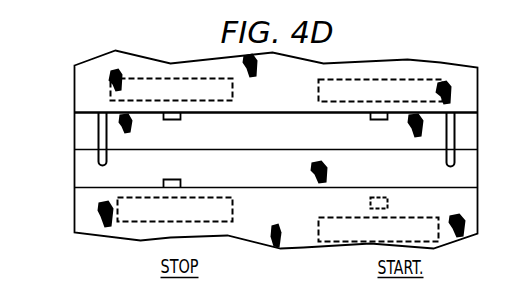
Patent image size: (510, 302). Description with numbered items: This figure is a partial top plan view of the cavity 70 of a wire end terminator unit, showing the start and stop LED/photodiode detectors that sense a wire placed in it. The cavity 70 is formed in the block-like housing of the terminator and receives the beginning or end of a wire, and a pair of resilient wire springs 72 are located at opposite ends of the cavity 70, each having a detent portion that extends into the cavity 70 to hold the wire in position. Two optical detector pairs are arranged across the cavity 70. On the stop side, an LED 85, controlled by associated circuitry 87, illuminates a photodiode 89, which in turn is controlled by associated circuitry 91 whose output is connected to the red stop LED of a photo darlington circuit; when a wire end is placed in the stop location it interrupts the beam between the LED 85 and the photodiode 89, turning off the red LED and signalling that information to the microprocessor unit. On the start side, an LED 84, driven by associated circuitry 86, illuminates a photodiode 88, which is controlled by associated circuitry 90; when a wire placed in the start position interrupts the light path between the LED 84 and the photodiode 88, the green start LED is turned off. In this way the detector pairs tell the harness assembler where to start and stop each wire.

The cavity 70 is at (297, 173).
The resilient wire spring 72 is at (98, 139).
The LED 84 is at (377, 119).
The LED 85 is at (174, 119).
The associated circuitry 86 is at (360, 85).
The associated circuitry 87 is at (150, 83).
The photodiode 88 is at (372, 196).
The photodiode 89 is at (179, 159).
The associated circuitry 90 is at (417, 217).
The associated circuitry 91 is at (212, 196).